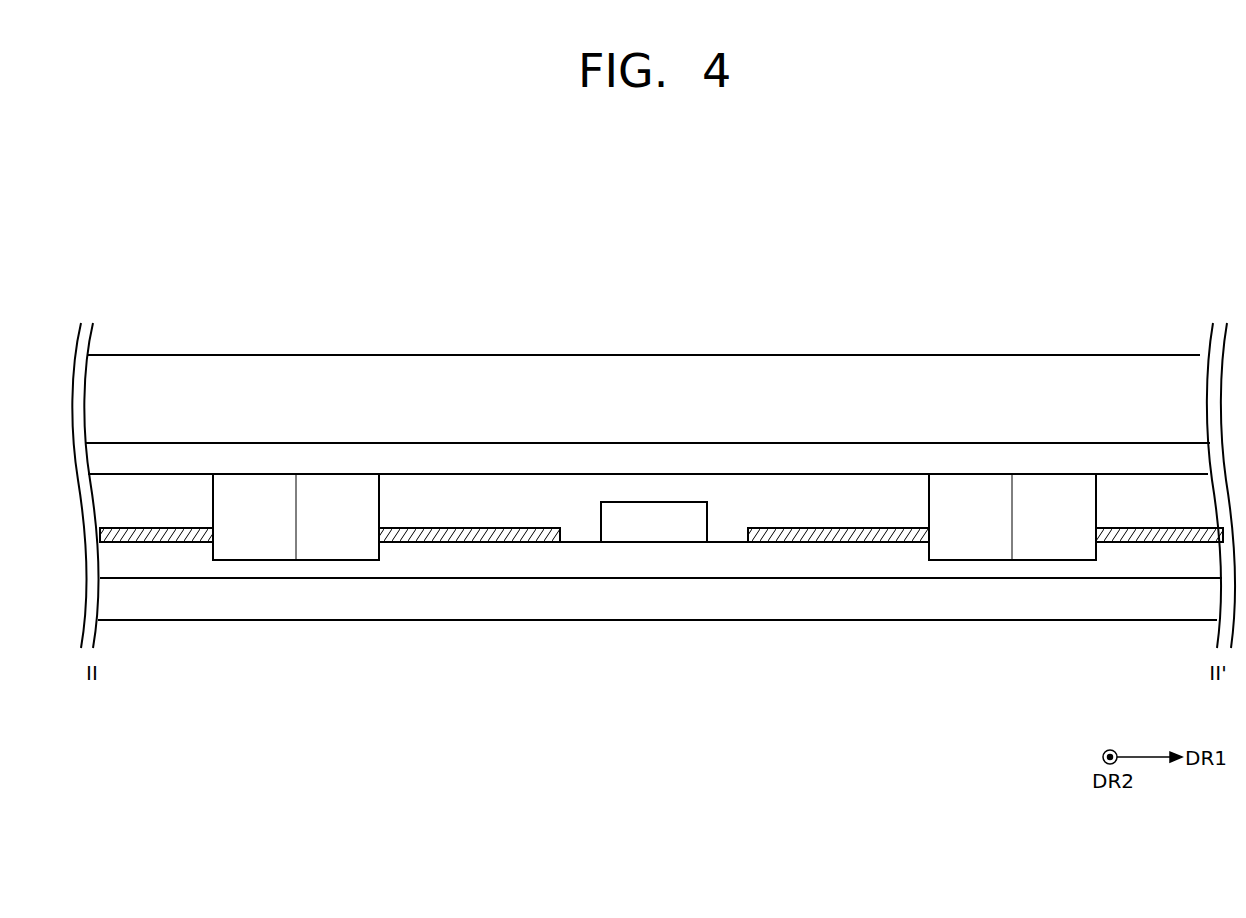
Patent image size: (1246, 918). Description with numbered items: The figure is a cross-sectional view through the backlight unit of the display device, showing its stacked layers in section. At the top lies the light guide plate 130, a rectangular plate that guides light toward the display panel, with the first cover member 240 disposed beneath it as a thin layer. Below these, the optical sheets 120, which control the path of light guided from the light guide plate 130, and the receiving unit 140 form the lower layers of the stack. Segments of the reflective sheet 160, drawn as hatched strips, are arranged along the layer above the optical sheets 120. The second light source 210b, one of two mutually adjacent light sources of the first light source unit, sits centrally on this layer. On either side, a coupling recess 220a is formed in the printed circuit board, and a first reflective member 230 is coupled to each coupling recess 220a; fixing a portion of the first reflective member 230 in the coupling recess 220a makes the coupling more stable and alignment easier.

The light guide plate 130 is at (958, 375).
The first cover member 240 is at (848, 458).
The reflective sheet 160 is at (882, 540).
The optical sheets 120 is at (765, 565).
The receiving unit 140 is at (825, 605).
The second light source 210b is at (657, 530).
The coupling recess 220a is at (273, 553).
The first reflective member 230 is at (337, 547).